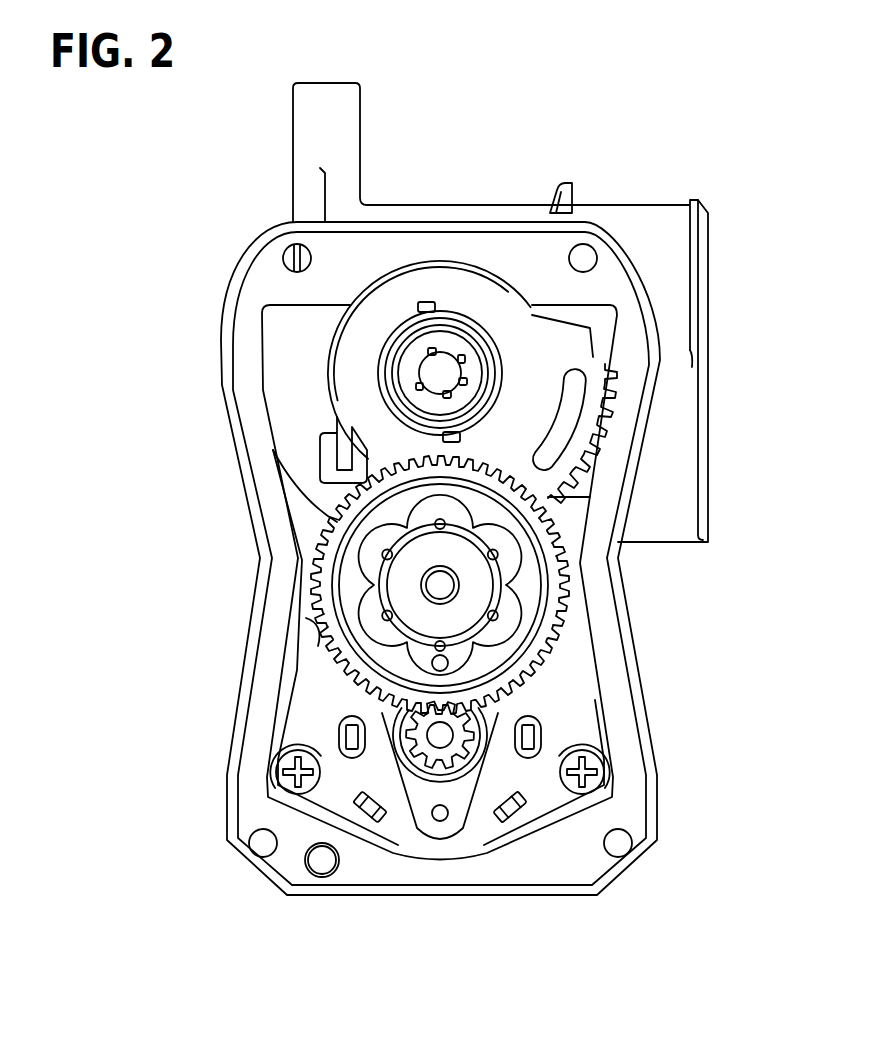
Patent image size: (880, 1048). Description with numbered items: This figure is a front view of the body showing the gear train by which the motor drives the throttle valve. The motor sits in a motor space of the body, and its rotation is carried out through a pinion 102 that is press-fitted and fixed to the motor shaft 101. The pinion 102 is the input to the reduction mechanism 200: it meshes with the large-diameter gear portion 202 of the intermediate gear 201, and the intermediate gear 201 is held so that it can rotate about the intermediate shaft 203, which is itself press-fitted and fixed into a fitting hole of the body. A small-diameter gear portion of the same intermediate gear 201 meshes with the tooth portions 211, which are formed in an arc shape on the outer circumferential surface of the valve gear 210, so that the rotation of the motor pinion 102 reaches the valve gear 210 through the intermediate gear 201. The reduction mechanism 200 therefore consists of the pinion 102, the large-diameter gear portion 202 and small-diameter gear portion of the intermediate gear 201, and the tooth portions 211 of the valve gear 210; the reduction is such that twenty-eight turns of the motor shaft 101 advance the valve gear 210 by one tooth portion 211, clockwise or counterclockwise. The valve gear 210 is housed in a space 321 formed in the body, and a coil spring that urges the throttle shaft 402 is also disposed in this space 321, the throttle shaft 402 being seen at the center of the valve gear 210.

The motor shaft 101 is at (437, 736).
The pinion 102 is at (415, 718).
The reduction mechanism 200 is at (538, 585).
The intermediate gear 201 is at (532, 555).
The large-diameter gear portion 202 is at (557, 617).
The intermediate shaft 203 is at (452, 600).
The valve gear 210 is at (557, 352).
The tooth portions 211 is at (603, 415).
The space 321 is at (300, 387).
The throttle shaft 402 is at (447, 363).